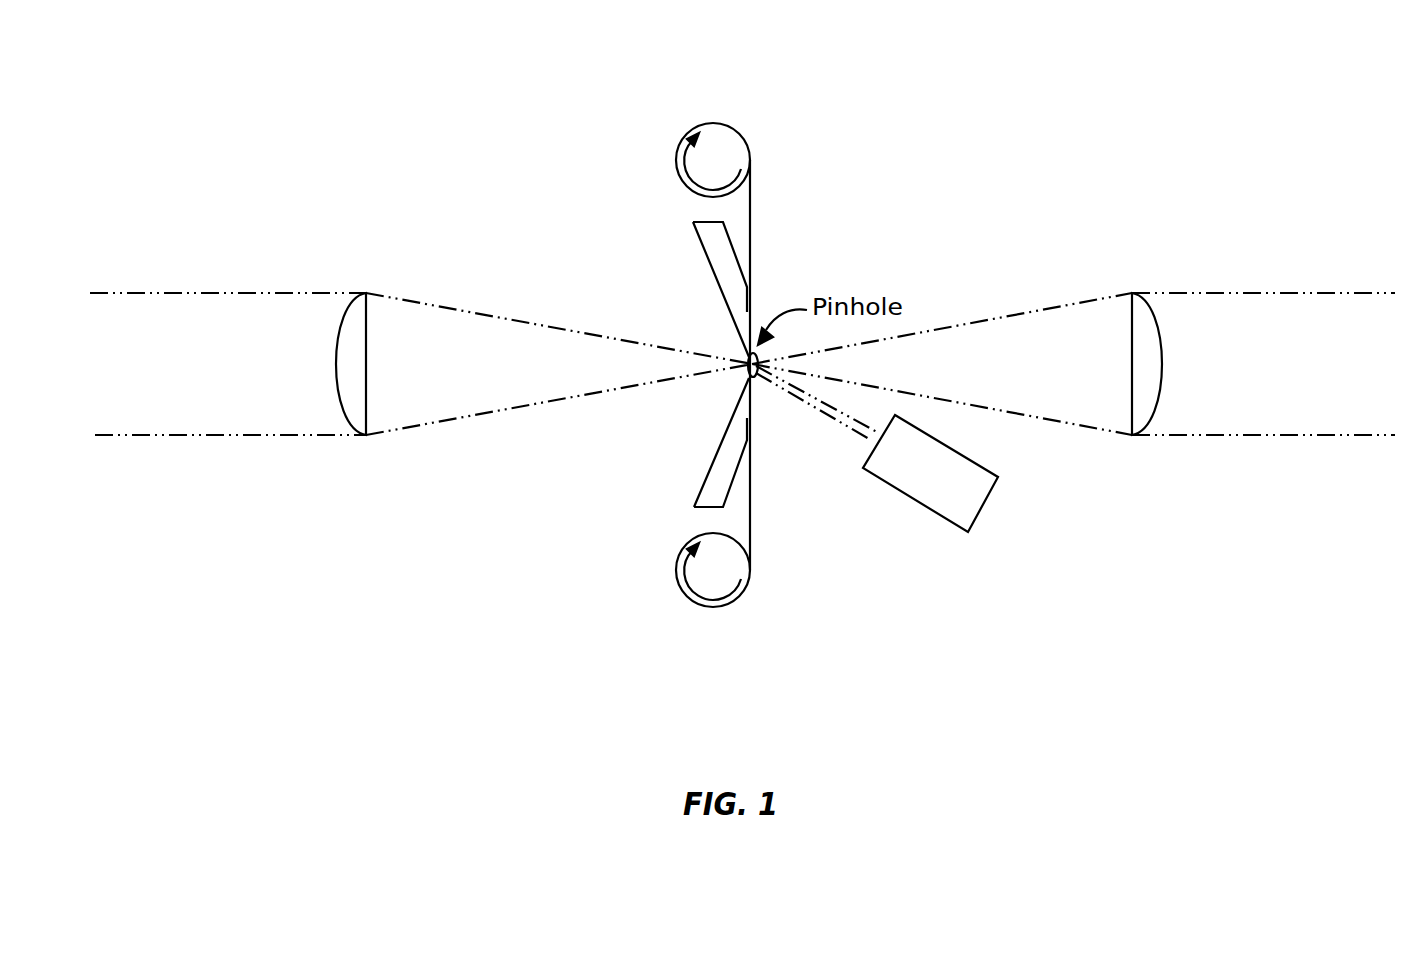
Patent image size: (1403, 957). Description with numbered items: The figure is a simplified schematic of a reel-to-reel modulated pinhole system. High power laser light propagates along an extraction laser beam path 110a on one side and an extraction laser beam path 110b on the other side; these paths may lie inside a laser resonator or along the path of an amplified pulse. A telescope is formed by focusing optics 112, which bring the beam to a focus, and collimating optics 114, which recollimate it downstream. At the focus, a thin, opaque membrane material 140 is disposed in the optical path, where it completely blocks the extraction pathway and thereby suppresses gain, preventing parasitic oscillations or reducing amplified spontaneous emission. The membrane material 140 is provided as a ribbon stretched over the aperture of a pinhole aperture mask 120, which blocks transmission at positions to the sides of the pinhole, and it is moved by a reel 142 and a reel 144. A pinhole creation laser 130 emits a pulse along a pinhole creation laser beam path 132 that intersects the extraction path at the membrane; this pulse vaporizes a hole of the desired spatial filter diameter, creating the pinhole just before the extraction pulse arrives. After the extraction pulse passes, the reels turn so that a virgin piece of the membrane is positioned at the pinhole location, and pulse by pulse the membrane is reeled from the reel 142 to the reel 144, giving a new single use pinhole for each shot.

The extraction laser beam path 110a is at (245, 337).
The extraction laser beam path 110b is at (1290, 344).
The focusing optics 112 is at (361, 436).
The collimating optics 114 is at (1138, 293).
The pinhole aperture mask 120 is at (716, 480).
The pinhole creation laser 130 is at (987, 507).
The pinhole creation laser beam path 132 is at (815, 428).
The membrane material 140 is at (751, 208).
The reel 142 is at (720, 155).
The reel 144 is at (720, 572).